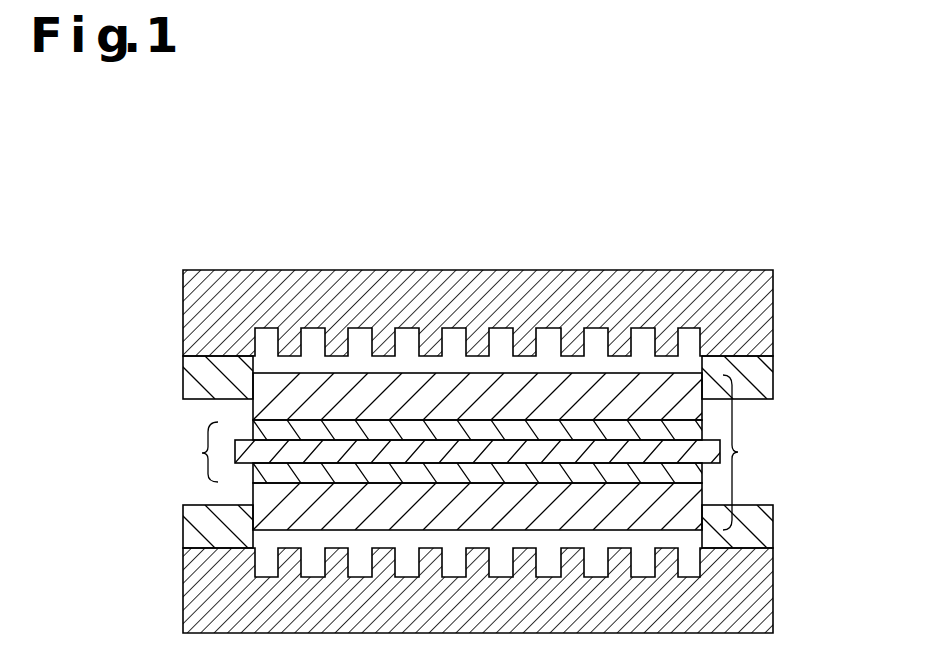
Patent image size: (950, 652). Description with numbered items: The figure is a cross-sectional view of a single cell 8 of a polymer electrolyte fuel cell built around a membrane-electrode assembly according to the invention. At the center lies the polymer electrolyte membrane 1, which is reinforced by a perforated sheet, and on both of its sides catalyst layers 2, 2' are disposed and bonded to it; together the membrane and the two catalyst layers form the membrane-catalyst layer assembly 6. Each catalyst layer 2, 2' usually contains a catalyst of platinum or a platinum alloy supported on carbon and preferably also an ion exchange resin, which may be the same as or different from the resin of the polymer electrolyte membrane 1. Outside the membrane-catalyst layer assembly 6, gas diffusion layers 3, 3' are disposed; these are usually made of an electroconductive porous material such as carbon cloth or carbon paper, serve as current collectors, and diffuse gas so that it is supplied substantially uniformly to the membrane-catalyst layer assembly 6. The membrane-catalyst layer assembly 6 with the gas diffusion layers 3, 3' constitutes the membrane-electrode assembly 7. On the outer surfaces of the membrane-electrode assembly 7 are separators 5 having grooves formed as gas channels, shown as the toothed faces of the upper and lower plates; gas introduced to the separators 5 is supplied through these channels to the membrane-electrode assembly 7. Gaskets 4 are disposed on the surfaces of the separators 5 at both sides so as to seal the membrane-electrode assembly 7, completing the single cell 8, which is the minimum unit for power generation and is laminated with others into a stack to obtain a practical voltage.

The polymer electrolyte membrane 1 is at (698, 457).
The catalyst layer 2 is at (554, 492).
The catalyst layer 2' is at (551, 411).
The gas diffusion layer 3 is at (428, 519).
The gas diffusion layer 3' is at (431, 377).
The gasket 4 is at (232, 512).
The separator 5 is at (183, 273).
The membrane-catalyst layer assembly 6 is at (192, 452).
The membrane-electrode assembly 7 is at (747, 452).
The single cell 8 is at (545, 248).